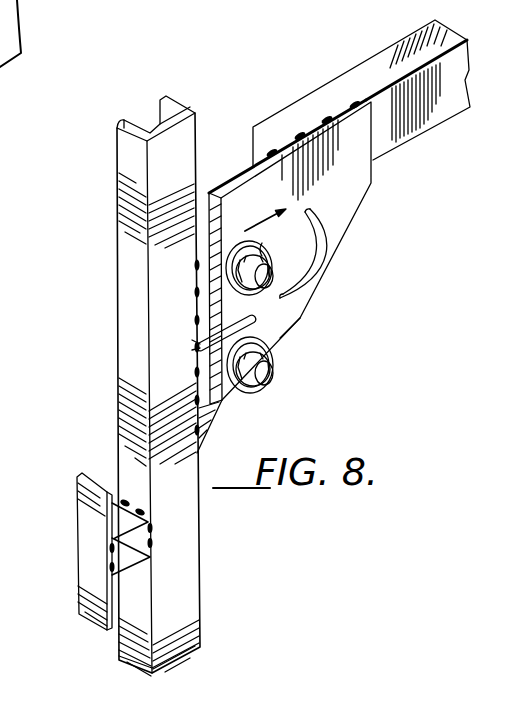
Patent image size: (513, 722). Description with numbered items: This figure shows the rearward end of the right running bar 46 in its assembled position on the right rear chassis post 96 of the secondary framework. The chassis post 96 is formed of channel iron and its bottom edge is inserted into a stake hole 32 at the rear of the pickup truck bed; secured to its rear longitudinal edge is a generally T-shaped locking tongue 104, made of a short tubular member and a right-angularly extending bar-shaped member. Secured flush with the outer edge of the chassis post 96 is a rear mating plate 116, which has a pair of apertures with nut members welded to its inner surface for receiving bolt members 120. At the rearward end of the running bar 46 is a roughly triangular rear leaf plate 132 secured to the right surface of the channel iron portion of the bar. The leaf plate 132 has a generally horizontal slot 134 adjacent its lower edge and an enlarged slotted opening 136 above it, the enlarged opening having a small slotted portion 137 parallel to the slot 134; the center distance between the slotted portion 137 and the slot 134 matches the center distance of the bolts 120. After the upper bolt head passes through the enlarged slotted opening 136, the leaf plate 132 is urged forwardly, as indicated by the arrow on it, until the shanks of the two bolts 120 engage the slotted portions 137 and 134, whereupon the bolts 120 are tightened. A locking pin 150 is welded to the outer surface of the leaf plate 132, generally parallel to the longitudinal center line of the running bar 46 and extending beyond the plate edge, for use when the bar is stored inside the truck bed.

The stake hole 32 is at (14, 66).
The running bar 46 is at (375, 56).
The chassis post 96 is at (132, 312).
The locking tongue 104 is at (92, 512).
The rear mating plate 116 is at (213, 413).
The bolt member 120 is at (258, 280).
The rear leaf plate 132 is at (352, 190).
The slot 134 is at (270, 339).
The enlarged slotted opening 136 is at (307, 258).
The small slotted portion 137 is at (266, 246).
The locking pin 150 is at (200, 345).